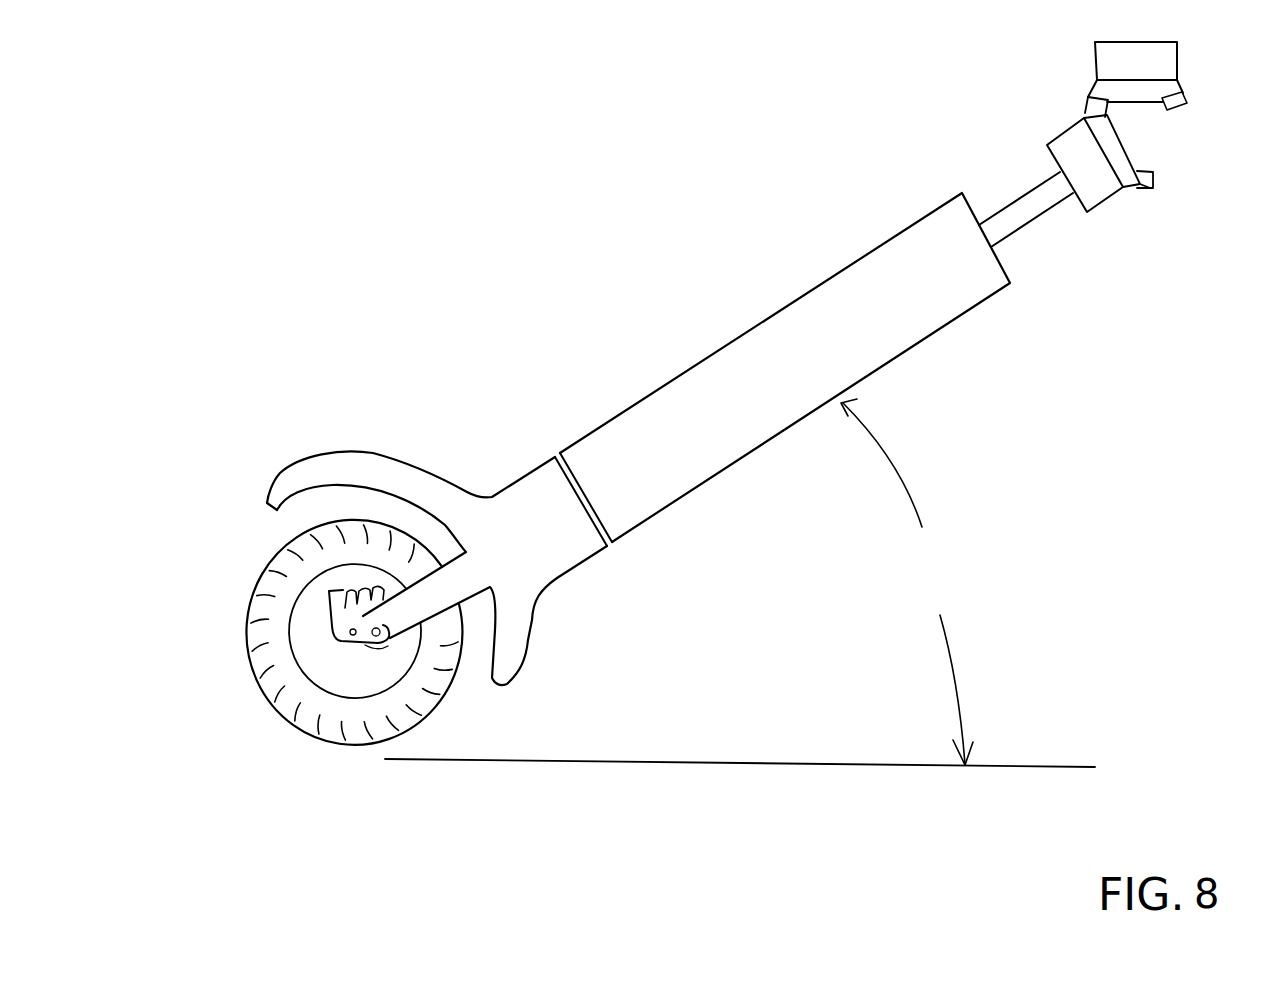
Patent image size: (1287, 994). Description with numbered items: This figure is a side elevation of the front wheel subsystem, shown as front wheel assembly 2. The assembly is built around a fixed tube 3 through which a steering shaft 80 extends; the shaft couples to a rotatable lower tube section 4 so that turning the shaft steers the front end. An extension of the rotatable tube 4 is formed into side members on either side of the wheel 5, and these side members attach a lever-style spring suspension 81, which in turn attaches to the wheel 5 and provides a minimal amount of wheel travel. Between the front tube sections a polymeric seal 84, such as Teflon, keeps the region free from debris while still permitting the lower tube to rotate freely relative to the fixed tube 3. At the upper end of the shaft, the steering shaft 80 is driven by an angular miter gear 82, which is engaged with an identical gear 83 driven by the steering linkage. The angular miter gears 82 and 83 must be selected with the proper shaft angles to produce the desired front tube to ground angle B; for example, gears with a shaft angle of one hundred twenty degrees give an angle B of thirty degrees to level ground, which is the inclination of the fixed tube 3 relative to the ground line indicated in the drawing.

The front wheel assembly 2 is at (580, 182).
The fixed tube 3 is at (792, 320).
The rotatable lower tube section 4 is at (528, 492).
The wheel 5 is at (247, 633).
The steering shaft 80 is at (1034, 212).
The lever-style spring suspension 81 is at (318, 627).
The angular miter gear 82 is at (1108, 196).
The identical gear 83 is at (1168, 60).
The polymeric seal 84 is at (610, 546).
The front tube to ground angle B is at (907, 582).